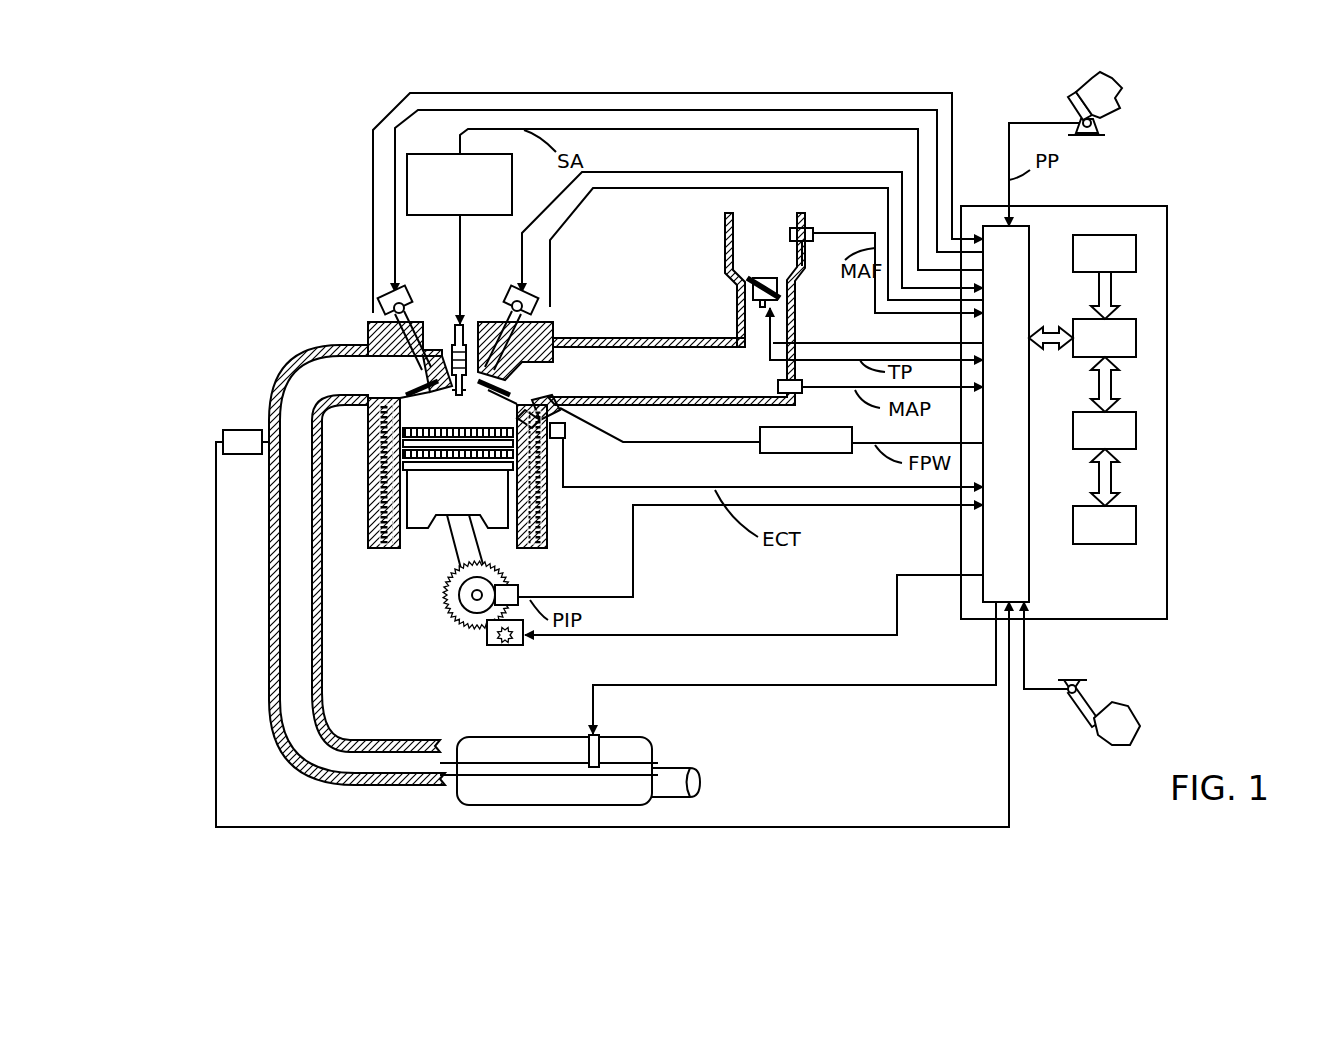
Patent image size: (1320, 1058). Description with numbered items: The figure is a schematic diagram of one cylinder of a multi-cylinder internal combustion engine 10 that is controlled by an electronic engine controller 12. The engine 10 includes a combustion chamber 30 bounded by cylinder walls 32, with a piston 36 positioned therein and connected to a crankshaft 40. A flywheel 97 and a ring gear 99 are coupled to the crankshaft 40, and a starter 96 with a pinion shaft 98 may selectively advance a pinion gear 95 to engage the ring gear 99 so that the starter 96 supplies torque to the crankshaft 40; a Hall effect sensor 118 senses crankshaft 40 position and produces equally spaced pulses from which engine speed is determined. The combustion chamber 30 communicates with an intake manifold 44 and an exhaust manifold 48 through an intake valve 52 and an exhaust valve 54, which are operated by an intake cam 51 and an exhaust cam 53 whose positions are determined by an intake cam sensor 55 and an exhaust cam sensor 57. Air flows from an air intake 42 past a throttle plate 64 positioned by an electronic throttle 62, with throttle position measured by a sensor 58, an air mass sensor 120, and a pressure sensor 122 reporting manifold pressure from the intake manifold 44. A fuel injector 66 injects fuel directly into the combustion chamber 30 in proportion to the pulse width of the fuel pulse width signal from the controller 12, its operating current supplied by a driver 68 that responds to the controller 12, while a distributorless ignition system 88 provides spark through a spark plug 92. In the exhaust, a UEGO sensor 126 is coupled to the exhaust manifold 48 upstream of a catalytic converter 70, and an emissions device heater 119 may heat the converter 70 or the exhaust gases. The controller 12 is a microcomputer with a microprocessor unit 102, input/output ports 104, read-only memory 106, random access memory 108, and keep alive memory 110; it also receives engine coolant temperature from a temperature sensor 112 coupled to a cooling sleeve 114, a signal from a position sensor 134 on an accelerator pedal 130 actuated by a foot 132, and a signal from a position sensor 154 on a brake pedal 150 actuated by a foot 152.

The internal combustion engine 10 is at (304, 280).
The electronic engine controller 12 is at (1167, 210).
The combustion chamber 30 is at (388, 502).
The cylinder walls 32 is at (403, 545).
The piston 36 is at (446, 517).
The crankshaft 40 is at (462, 613).
The air intake 42 is at (775, 257).
The intake manifold 44 is at (718, 387).
The exhaust manifold 48 is at (352, 392).
The intake cam 51 is at (512, 292).
The intake valve 52 is at (507, 376).
The exhaust cam 53 is at (402, 292).
The exhaust valve 54 is at (418, 380).
The intake cam sensor 55 is at (528, 305).
The exhaust cam sensor 57 is at (386, 305).
The throttle position sensor 58 is at (742, 308).
The electronic throttle 62 is at (778, 290).
The throttle plate 64 is at (746, 286).
The fuel injector 66 is at (562, 412).
The driver 68 is at (773, 454).
The catalytic converter 70 is at (470, 738).
The distributorless ignition system 88 is at (419, 154).
The spark plug 92 is at (464, 325).
The pinion gear 95 is at (512, 647).
The starter 96 is at (523, 642).
The flywheel 97 is at (452, 592).
The pinion shaft 98 is at (503, 643).
The ring gear 99 is at (478, 630).
The microprocessor unit 102 is at (1136, 337).
The input/output ports 104 is at (1030, 234).
The read-only memory 106 is at (1136, 250).
The random access memory 108 is at (1136, 430).
The keep alive memory 110 is at (1136, 525).
The temperature sensor 112 is at (566, 440).
The cooling sleeve 114 is at (546, 510).
The Hall effect sensor 118 is at (512, 587).
The emissions device heater 119 is at (600, 738).
The air mass sensor 120 is at (810, 228).
The pressure sensor 122 is at (797, 394).
The Universal Exhaust Gas Oxygen sensor 126 is at (223, 437).
The accelerator pedal 130 is at (1066, 100).
The foot 132 is at (1116, 90).
The position sensor 134 is at (1100, 125).
The brake pedal 150 is at (1094, 732).
The foot 152 is at (1122, 706).
The position sensor 154 is at (1068, 688).